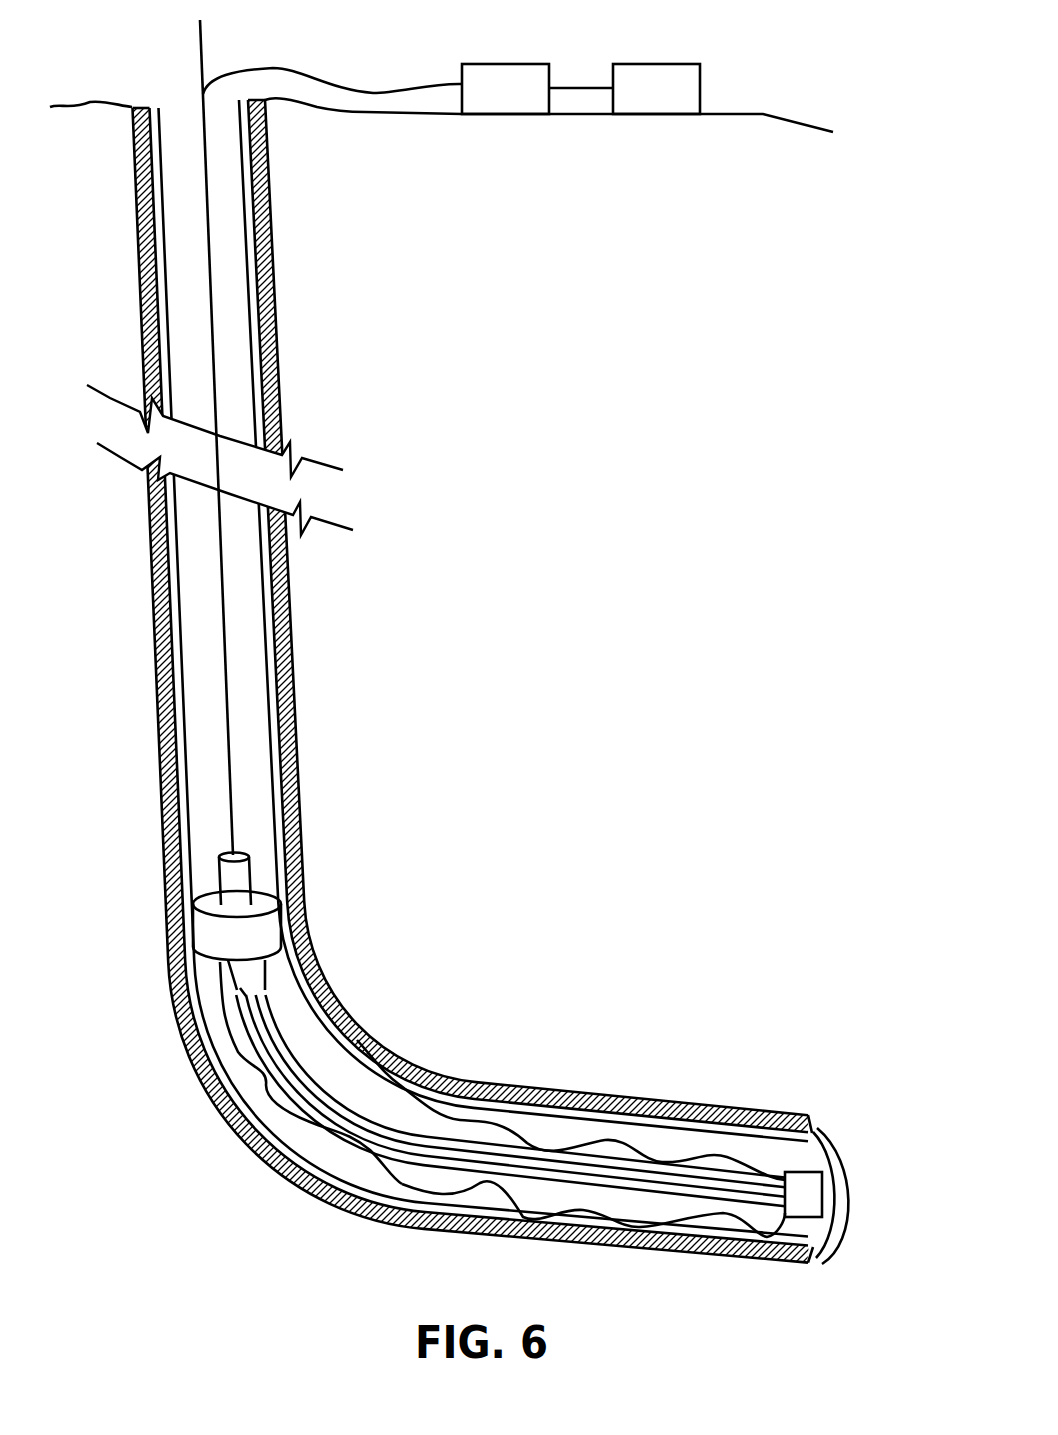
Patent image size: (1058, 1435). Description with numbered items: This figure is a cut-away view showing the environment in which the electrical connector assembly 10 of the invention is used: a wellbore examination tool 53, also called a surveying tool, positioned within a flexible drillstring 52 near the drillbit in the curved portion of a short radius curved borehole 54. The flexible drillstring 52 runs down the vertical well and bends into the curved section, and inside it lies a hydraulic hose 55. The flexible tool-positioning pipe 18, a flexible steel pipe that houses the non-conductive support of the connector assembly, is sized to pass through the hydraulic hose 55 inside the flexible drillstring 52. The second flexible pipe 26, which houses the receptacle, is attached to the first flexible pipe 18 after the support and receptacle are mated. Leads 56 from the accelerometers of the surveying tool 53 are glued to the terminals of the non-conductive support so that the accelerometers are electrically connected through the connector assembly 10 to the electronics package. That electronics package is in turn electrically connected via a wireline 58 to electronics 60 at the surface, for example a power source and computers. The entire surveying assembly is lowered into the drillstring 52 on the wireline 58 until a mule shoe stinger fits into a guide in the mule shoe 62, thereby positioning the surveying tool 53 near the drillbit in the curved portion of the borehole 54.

The electrical connector assembly 10 is at (516, 1002).
The flexible tool-positioning pipe 18 is at (373, 1107).
The second flexible pipe 26 is at (243, 853).
The flexible drillstring 52 is at (360, 1032).
The wellbore examination tool 53 is at (812, 1188).
The borehole 54 is at (287, 1173).
The hydraulic hose 55 is at (398, 1187).
The leads 56 is at (290, 1063).
The wireline 58 is at (213, 337).
The electronics at the surface 60 is at (513, 95).
The mule shoe 62 is at (297, 832).